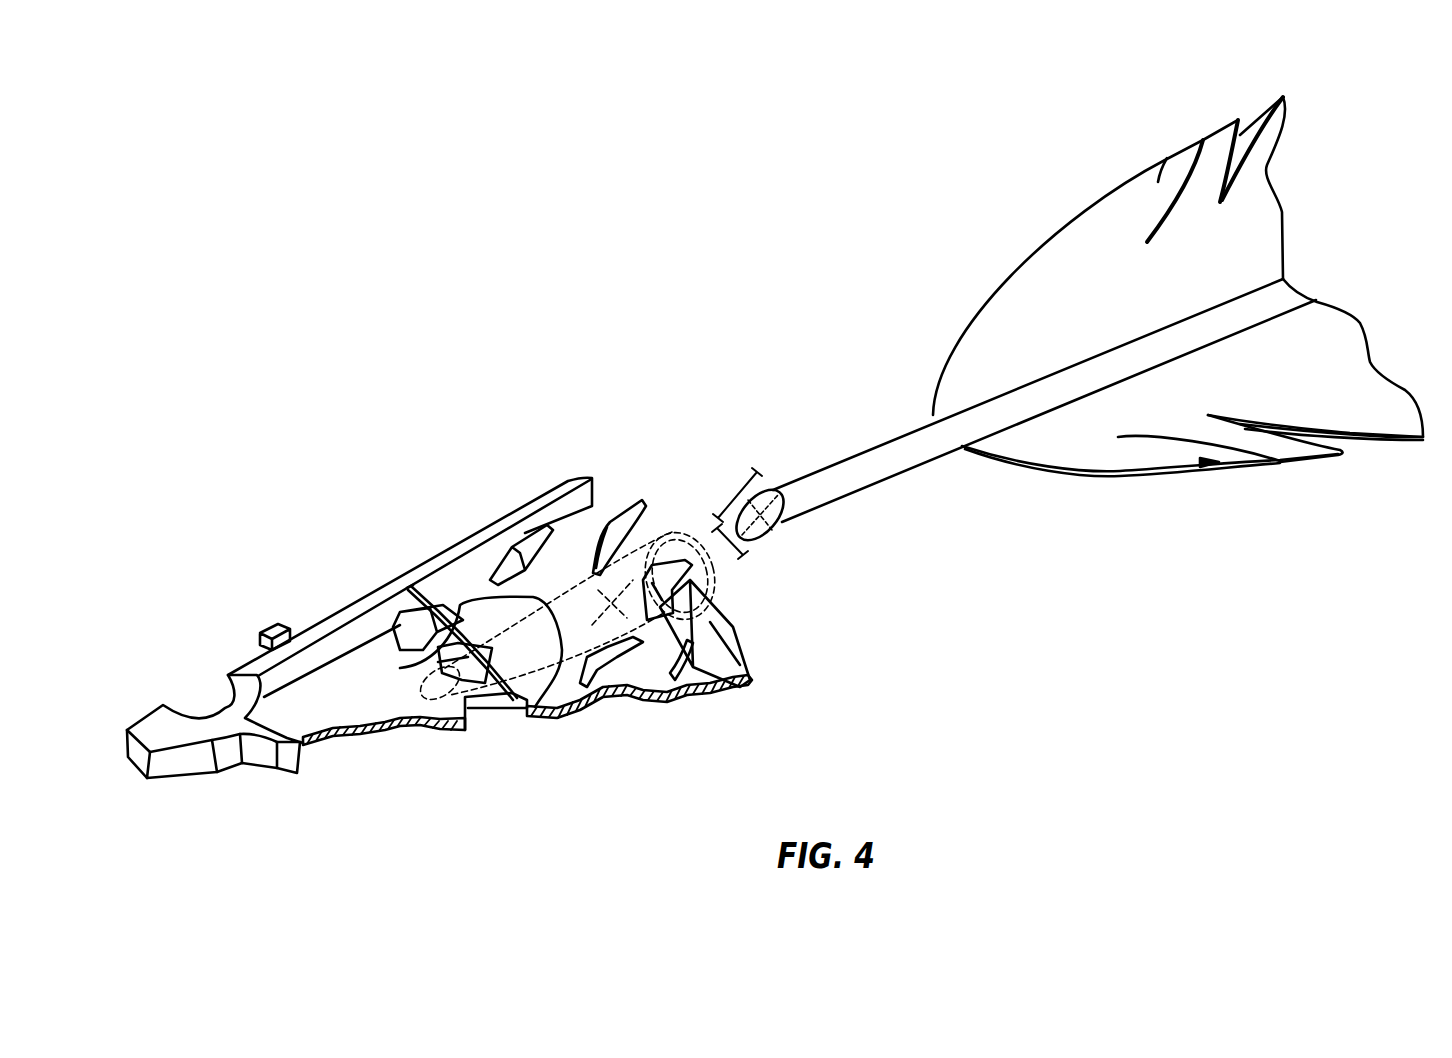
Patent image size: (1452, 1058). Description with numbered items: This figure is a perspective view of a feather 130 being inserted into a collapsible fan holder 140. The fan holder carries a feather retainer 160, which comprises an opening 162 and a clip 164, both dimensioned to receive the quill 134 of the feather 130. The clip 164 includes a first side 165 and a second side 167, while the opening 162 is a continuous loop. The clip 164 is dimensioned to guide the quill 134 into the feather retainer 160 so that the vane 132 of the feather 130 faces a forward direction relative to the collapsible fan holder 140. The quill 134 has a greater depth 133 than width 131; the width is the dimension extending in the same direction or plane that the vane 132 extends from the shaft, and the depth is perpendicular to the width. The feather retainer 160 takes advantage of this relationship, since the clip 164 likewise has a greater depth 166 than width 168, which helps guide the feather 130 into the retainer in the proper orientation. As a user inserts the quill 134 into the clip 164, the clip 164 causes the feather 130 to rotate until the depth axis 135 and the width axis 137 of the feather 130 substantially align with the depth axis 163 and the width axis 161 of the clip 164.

The feather 130 is at (965, 266).
The width 131 is at (994, 451).
The vane 132 is at (1148, 417).
The depth 133 is at (738, 497).
The quill 134 is at (867, 480).
The depth axis 135 is at (755, 537).
The width axis 137 is at (777, 522).
The collapsible fan holder 140 is at (300, 602).
The feather retainer 160 is at (443, 700).
The width axis 161 is at (625, 593).
The opening 162 is at (400, 668).
The depth axis 163 is at (667, 593).
The clip 164 is at (670, 530).
The first side 165 is at (462, 600).
The depth 166 is at (630, 593).
The second side 167 is at (705, 660).
The width 168 is at (541, 660).